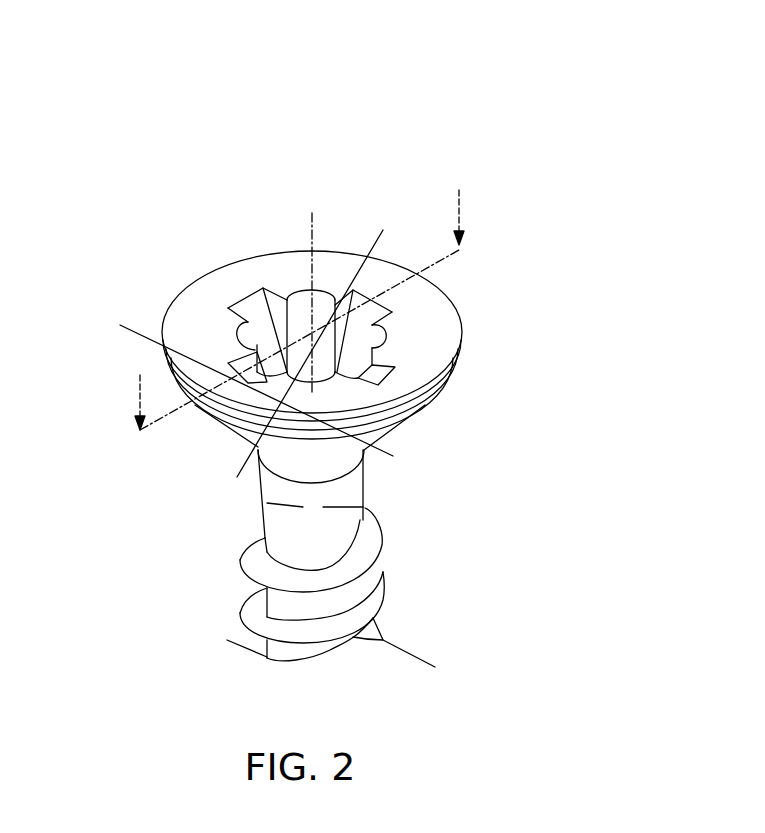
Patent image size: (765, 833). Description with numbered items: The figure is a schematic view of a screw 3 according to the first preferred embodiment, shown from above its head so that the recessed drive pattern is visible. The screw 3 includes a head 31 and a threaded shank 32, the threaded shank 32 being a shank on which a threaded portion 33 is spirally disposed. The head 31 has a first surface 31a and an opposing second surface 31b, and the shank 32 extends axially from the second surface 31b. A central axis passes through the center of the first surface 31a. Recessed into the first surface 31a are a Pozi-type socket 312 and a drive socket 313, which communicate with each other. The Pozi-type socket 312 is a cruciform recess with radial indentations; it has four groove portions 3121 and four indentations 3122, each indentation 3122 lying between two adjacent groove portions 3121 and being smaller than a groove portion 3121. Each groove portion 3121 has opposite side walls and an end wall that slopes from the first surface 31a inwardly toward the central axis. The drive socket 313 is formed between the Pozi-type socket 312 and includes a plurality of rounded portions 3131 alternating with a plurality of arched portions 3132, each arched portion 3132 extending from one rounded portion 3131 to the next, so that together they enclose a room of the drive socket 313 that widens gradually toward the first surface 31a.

The screw 3 is at (186, 116).
The head 31 is at (258, 246).
The first surface 31a is at (233, 327).
The second surface 31b is at (340, 375).
The Pozi-type socket 312 is at (242, 391).
The groove portion 3121 is at (337, 340).
The indentation 3122 is at (390, 333).
The drive socket 313 is at (395, 317).
The rounded portion 3131 is at (205, 320).
The arched portion 3132 is at (383, 377).
The threaded shank 32 is at (383, 510).
The threaded portion 33 is at (383, 598).